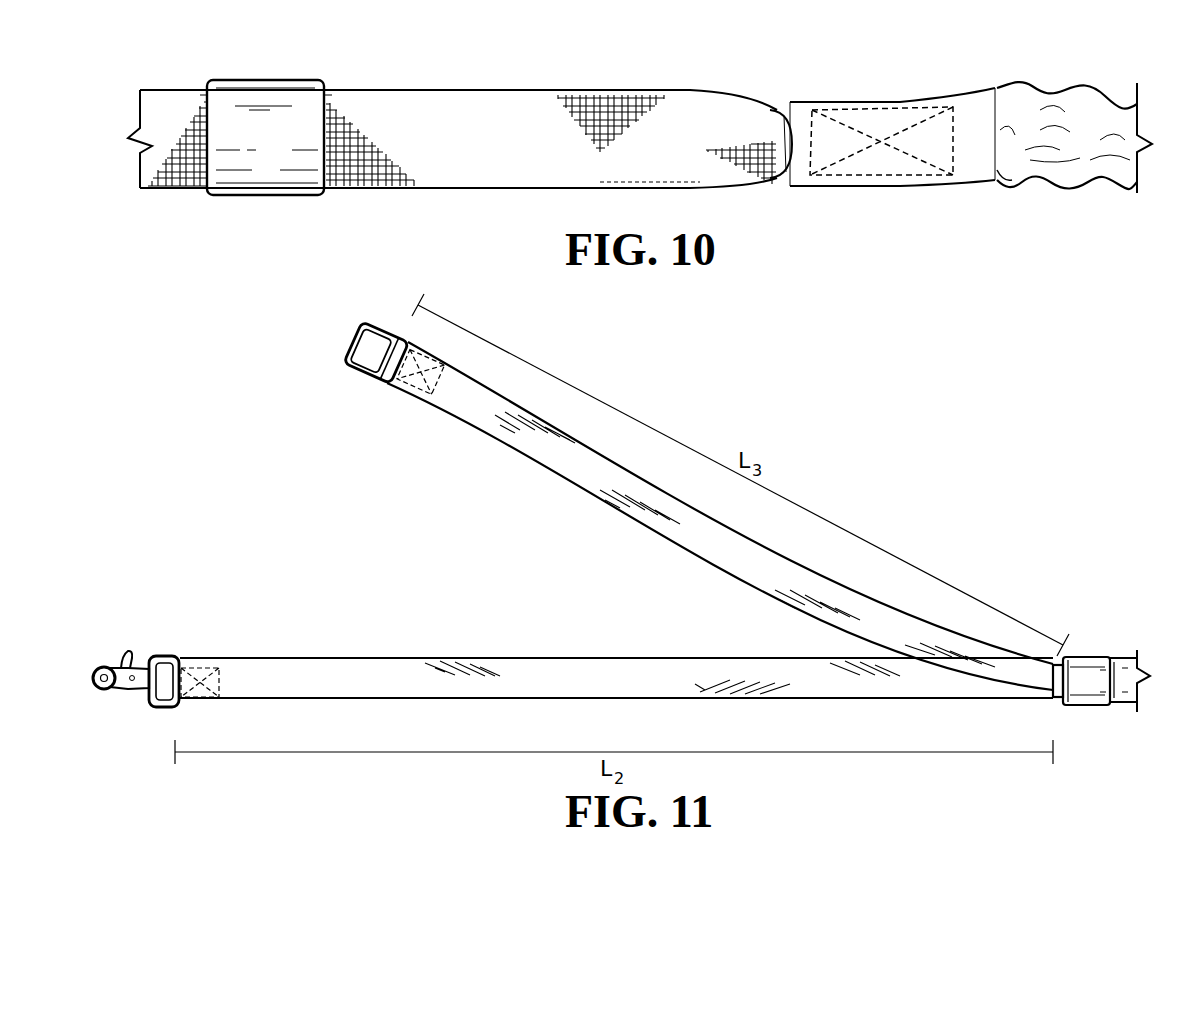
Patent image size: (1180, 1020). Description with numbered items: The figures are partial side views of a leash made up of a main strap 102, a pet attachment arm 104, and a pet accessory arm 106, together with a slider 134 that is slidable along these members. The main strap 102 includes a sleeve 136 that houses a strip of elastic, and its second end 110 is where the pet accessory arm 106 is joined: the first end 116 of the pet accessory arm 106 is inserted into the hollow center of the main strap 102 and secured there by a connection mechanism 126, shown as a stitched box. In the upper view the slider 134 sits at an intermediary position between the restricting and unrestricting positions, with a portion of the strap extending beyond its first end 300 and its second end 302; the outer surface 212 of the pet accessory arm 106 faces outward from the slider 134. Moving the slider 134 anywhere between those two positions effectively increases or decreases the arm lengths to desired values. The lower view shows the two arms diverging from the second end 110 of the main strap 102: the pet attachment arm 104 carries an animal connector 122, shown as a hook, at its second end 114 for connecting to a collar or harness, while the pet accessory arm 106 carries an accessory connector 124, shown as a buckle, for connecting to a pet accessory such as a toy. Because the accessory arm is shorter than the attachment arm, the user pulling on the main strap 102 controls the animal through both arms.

In FIG. 10, the main strap 102 is at (1047, 117).
In FIG. 11, the main strap 102 is at (1128, 673).
In FIG. 11, the pet attachment arm 104 is at (318, 686).
In FIG. 10, the pet accessory arm 106 is at (607, 120).
In FIG. 11, the pet accessory arm 106 is at (582, 477).
In FIG. 10, the second end of the main strap 110 is at (790, 118).
In FIG. 11, the second end of the main strap 110 is at (1055, 692).
In FIG. 11, the second end of the pet attachment arm 114 is at (178, 668).
In FIG. 10, the first end of the pet accessory arm 116 is at (777, 118).
In FIG. 11, the animal connector 122 is at (110, 697).
In FIG. 11, the accessory connector 124 is at (373, 327).
In FIG. 10, the connection mechanism 126 is at (877, 110).
In FIG. 10, the slider 134 is at (272, 108).
In FIG. 10, the sleeve 136 is at (1010, 174).
In FIG. 11, the sleeve 136 is at (1130, 690).
In FIG. 10, the outer surface of the pet accessory arm 212 is at (470, 113).
In FIG. 10, the first end of the slider 300 is at (190, 120).
In FIG. 10, the second end of the slider 302 is at (333, 113).